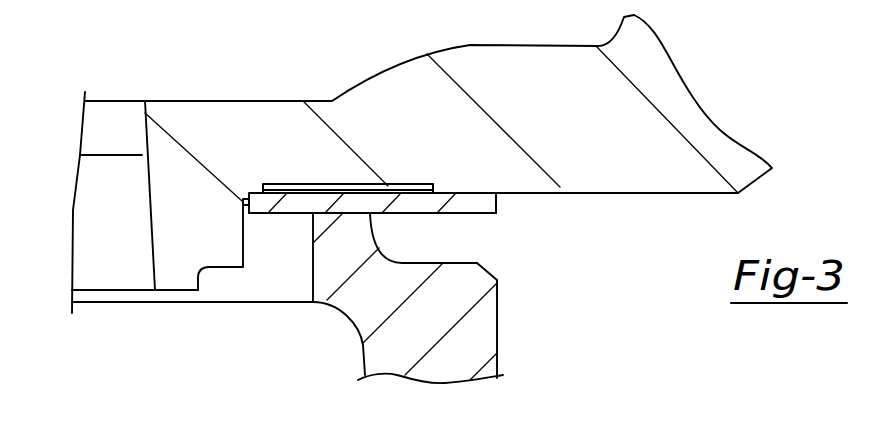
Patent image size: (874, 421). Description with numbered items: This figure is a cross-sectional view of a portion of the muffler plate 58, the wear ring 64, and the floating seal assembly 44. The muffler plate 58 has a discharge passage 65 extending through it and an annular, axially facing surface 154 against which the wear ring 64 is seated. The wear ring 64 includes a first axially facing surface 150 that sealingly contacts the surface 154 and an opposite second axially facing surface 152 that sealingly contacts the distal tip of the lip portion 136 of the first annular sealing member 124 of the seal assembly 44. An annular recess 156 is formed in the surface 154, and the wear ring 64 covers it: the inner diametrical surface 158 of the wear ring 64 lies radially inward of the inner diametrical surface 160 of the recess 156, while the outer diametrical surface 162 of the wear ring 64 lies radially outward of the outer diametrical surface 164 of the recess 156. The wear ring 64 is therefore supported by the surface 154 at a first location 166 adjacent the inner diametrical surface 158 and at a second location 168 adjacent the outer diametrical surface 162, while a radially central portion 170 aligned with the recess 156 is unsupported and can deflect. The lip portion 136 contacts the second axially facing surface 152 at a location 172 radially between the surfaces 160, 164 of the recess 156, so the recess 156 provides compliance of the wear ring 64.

The muffler plate 58 is at (191, 84).
The discharge passage 65 is at (143, 137).
The first location 166 is at (257, 193).
The inner diametrical surface of the recess 160 is at (292, 189).
The first axially facing surface 150 is at (323, 193).
The radially central portion 170 is at (348, 193).
The annular recess 156 is at (373, 190).
The outer diametrical surface of the recess 164 is at (420, 190).
The second location 168 is at (464, 194).
The outer diametrical surface of the wear ring 162 is at (497, 200).
The axially facing surface 154 is at (544, 194).
The wear ring 64 is at (489, 220).
The lip portion 136 is at (365, 229).
The floating seal assembly 44 is at (496, 270).
The first annular sealing member 124 is at (483, 312).
The inner diametrical surface of the wear ring 158 is at (245, 200).
The second axially facing surface 152 is at (267, 212).
The location 172 is at (348, 213).